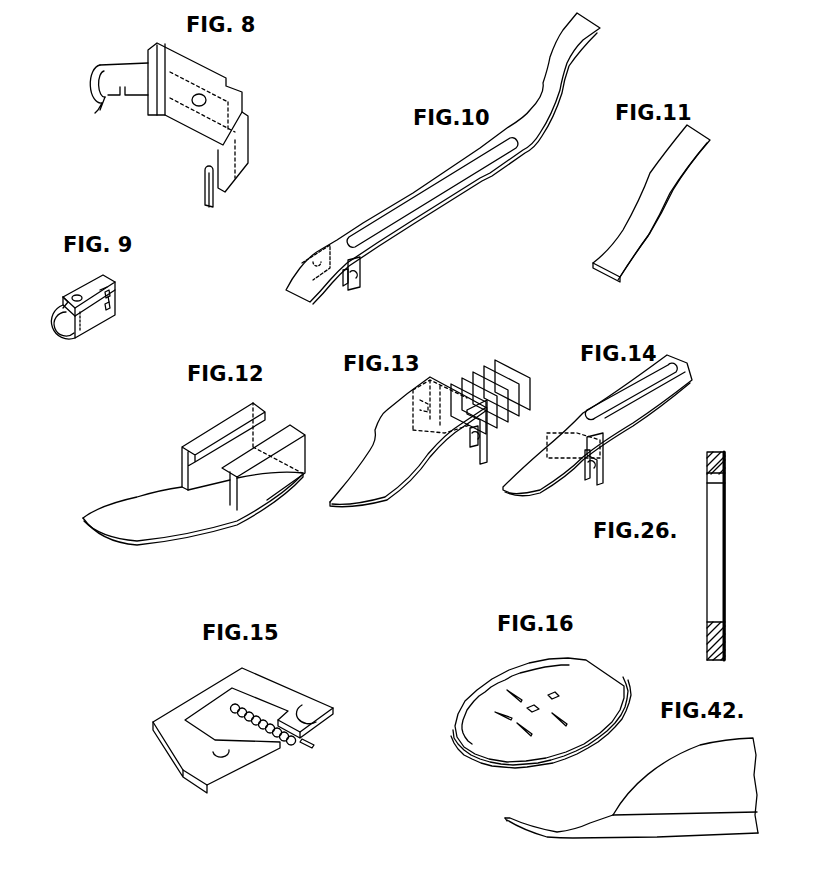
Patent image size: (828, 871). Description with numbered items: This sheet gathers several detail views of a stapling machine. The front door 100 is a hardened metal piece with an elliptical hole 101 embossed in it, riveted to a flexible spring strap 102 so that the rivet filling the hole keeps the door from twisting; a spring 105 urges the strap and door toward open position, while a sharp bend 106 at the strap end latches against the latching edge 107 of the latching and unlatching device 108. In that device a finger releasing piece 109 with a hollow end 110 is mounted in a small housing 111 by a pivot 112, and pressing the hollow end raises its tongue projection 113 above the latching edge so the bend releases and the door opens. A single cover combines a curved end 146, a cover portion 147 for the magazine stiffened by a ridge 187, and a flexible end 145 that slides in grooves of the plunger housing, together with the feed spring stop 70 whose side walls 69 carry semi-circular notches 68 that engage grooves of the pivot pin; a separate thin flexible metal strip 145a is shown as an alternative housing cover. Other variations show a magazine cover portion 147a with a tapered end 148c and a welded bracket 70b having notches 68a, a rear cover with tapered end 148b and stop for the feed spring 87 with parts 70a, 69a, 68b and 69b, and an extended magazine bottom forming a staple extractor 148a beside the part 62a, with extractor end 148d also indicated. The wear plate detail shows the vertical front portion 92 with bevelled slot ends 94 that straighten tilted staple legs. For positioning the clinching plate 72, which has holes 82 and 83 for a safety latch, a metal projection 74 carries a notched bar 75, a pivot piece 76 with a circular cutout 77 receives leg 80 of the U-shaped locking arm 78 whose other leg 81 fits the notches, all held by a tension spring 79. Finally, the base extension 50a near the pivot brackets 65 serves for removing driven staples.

In FIG. 8, the front door 100 is at (217, 60).
In FIG. 8, the hole 101 is at (195, 105).
In FIG. 8, the flexible spring strap 102 is at (121, 80).
In FIG. 8, the spring 105 is at (96, 113).
In FIG. 8, the sharp bend 106 is at (207, 160).
In FIG. 9, the latching and unlatching device 108 is at (95, 279).
In FIG. 9, the small housing 111 is at (100, 290).
In FIG. 9, the latching edge 107 is at (112, 306).
In FIG. 9, the pivot 112 is at (63, 300).
In FIG. 9, the tongue projection 113 is at (110, 298).
In FIG. 9, the finger releasing piece 109 is at (90, 318).
In FIG. 9, the hollow end 110 is at (45, 345).
In FIG. 10, the flexible end 145 is at (557, 57).
In FIG. 10, the ridge 187 is at (457, 175).
In FIG. 10, the cover portion 147 is at (410, 222).
In FIG. 10, the curved end 146 is at (300, 277).
In FIG. 10, the feed spring stop 70 is at (358, 273).
In FIG. 10, the semi-circular notch 68 is at (343, 281).
In FIG. 10, the side walls 69 is at (355, 285).
In FIG. 11, the thin flexible metal strip 145a is at (653, 208).
In FIG. 12, the staple extractor 148a is at (140, 523).
In FIG. 12, the bracket 62a is at (267, 480).
In FIG. 13, the feed spring 87 is at (494, 390).
In FIG. 13, the tapered end 148b is at (377, 487).
In FIG. 13, the clip 70a is at (488, 440).
In FIG. 13, the notches 68a is at (466, 438).
In FIG. 13, the clip hook 69a is at (481, 462).
In FIG. 14, the tapered end 148c is at (550, 467).
In FIG. 14, the magazine cover portion 147a is at (643, 412).
In FIG. 14, the bracket 70b is at (597, 447).
In FIG. 14, the clip leg 68b is at (585, 470).
In FIG. 14, the clip hook 69b is at (597, 477).
In FIG. 26, the vertical front portion 92 is at (707, 565).
In FIG. 26, the ends of the slot 94 is at (713, 627).
In FIG. 15, the locking arm 78 is at (187, 708).
In FIG. 15, the leg 80 is at (253, 683).
In FIG. 15, the circular cutout 77 is at (311, 698).
In FIG. 15, the pivot piece 76 is at (330, 708).
In FIG. 15, the metal projection 74 is at (212, 752).
In FIG. 15, the notched bar 75 is at (200, 777).
In FIG. 15, the leg 81 is at (223, 750).
In FIG. 15, the tension spring 79 is at (297, 740).
In FIG. 16, the clinching plate 72 is at (580, 680).
In FIG. 16, the hole 82 is at (532, 706).
In FIG. 16, the hole 83 is at (553, 693).
In FIG. 42, the pivot brackets 65 is at (660, 788).
In FIG. 42, the base extension 50a is at (710, 827).
In FIG. 42, the sole tip 148d is at (530, 827).